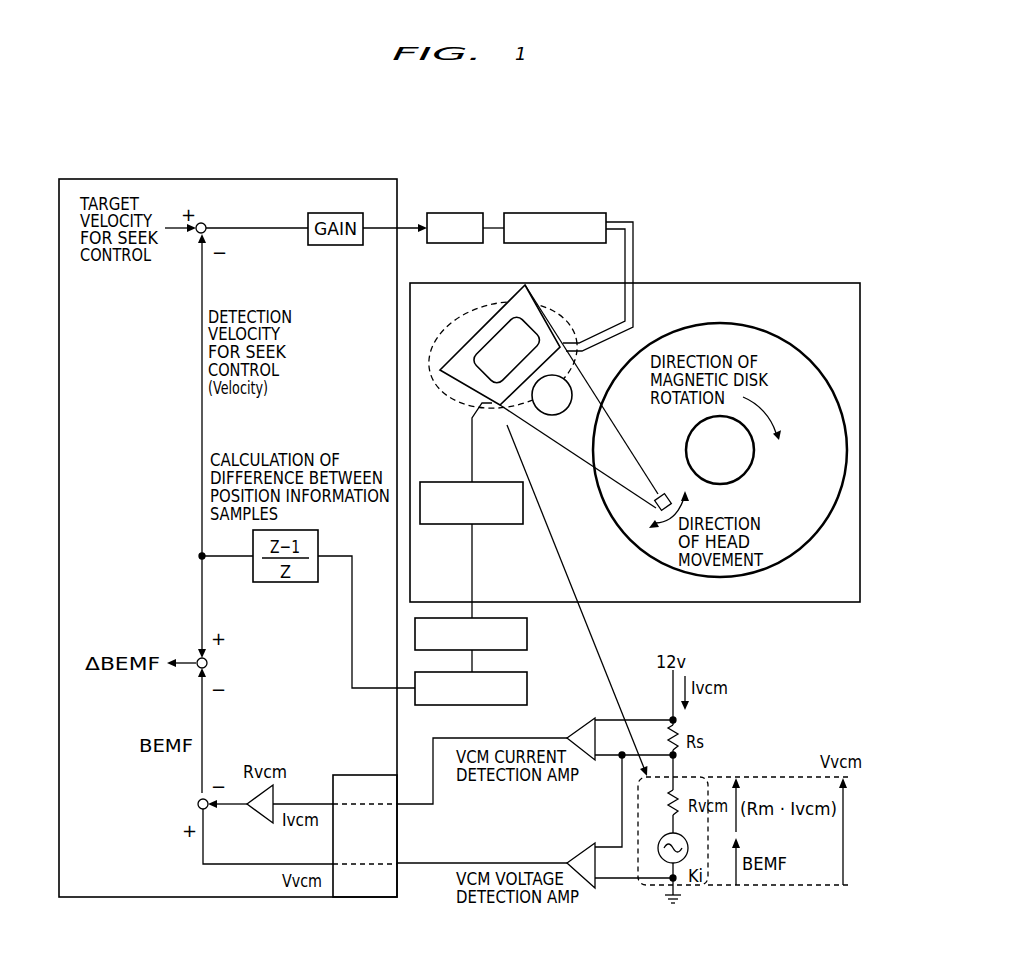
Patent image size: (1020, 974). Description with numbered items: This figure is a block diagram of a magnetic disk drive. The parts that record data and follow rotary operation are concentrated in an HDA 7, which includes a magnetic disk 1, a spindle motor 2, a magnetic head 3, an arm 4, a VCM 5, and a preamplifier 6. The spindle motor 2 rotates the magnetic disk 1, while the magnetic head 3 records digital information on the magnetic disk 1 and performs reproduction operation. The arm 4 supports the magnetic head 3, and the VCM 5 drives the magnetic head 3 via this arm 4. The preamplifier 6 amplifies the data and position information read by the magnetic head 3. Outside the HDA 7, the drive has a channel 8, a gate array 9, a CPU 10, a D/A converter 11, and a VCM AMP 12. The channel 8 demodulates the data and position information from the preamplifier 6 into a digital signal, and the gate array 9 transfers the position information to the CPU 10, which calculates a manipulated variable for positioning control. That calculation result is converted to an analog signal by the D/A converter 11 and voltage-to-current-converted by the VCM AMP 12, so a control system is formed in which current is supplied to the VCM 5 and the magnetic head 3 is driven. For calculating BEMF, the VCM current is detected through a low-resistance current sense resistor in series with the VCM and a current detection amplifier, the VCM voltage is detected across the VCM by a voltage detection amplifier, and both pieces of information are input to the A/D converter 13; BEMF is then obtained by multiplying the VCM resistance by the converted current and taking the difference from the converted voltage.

The magnetic disk 1 is at (776, 329).
The spindle motor 2 is at (744, 475).
The magnetic head 3 is at (648, 512).
The arm 4 is at (580, 440).
The VCM 5 is at (548, 323).
The preamplifier 6 is at (450, 482).
The HDA 7 is at (748, 283).
The channel 8 is at (527, 636).
The gate array 9 is at (527, 690).
The CPU 10 is at (330, 179).
The D/A converter 11 is at (461, 212).
The VCM AMP 12 is at (565, 212).
The A/D converter 13 is at (354, 775).